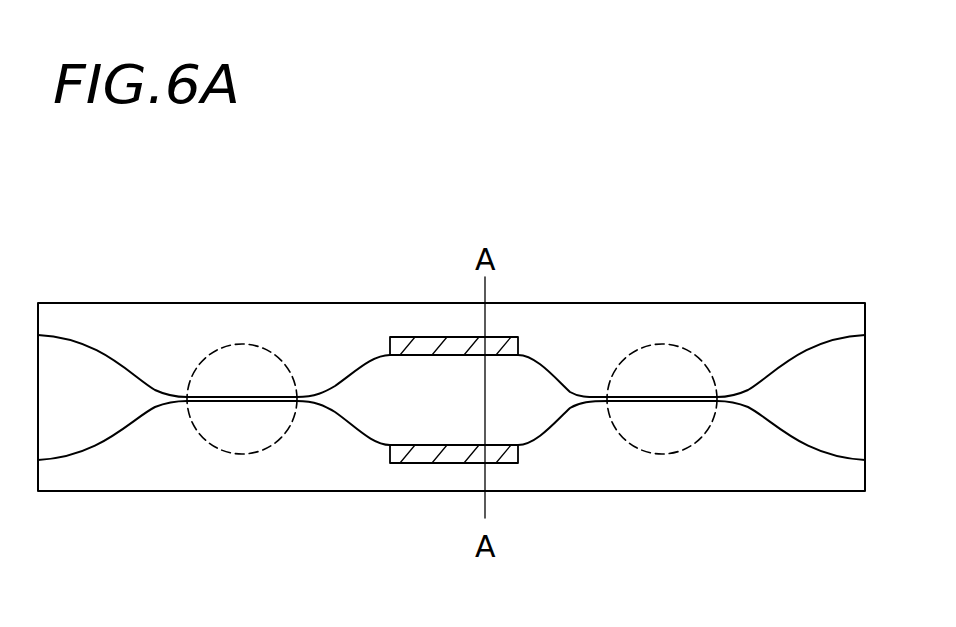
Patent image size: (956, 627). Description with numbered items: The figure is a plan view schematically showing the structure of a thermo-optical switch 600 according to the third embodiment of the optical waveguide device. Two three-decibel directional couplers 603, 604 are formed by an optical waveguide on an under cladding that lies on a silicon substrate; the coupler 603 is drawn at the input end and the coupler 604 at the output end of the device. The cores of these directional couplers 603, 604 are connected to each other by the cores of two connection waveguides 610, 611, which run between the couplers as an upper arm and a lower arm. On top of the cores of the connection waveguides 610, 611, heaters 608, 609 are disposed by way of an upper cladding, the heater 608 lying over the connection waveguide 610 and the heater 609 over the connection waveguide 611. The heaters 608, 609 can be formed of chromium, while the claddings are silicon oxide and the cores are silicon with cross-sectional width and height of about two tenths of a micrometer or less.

The thermo-optical switch 600 is at (868, 177).
The 3 dB directional coupler 603 is at (242, 344).
The 3 dB directional coupler 604 is at (663, 344).
The heater 608 is at (427, 346).
The heater 609 is at (413, 456).
The connection waveguide 610 is at (548, 363).
The connection waveguide 611 is at (543, 437).